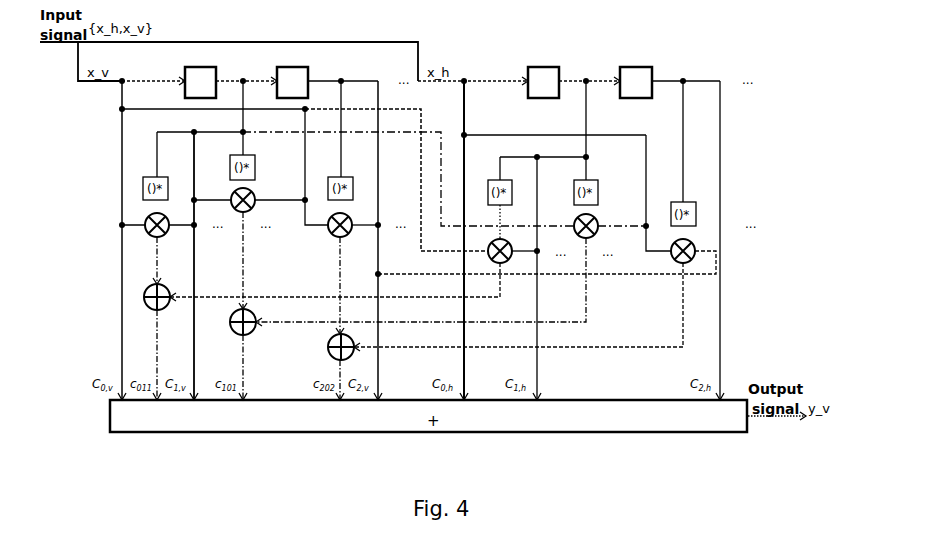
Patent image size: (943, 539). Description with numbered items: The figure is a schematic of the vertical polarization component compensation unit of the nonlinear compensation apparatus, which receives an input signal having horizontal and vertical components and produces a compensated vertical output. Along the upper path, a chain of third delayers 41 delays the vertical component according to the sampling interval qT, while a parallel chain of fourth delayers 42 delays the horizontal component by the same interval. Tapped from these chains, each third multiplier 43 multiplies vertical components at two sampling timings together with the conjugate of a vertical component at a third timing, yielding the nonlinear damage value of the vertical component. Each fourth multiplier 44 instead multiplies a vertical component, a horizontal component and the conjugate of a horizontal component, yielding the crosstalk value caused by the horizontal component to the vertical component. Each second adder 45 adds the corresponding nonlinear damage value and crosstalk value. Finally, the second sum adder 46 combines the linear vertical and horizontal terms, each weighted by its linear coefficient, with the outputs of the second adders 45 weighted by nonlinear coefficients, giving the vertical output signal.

The third delayer 41 is at (246, 74).
The fourth delayer 42 is at (590, 71).
The third multiplier 43 is at (257, 218).
The fourth multiplier 44 is at (602, 243).
The second adder 45 is at (241, 322).
The second sum adder 46 is at (447, 433).